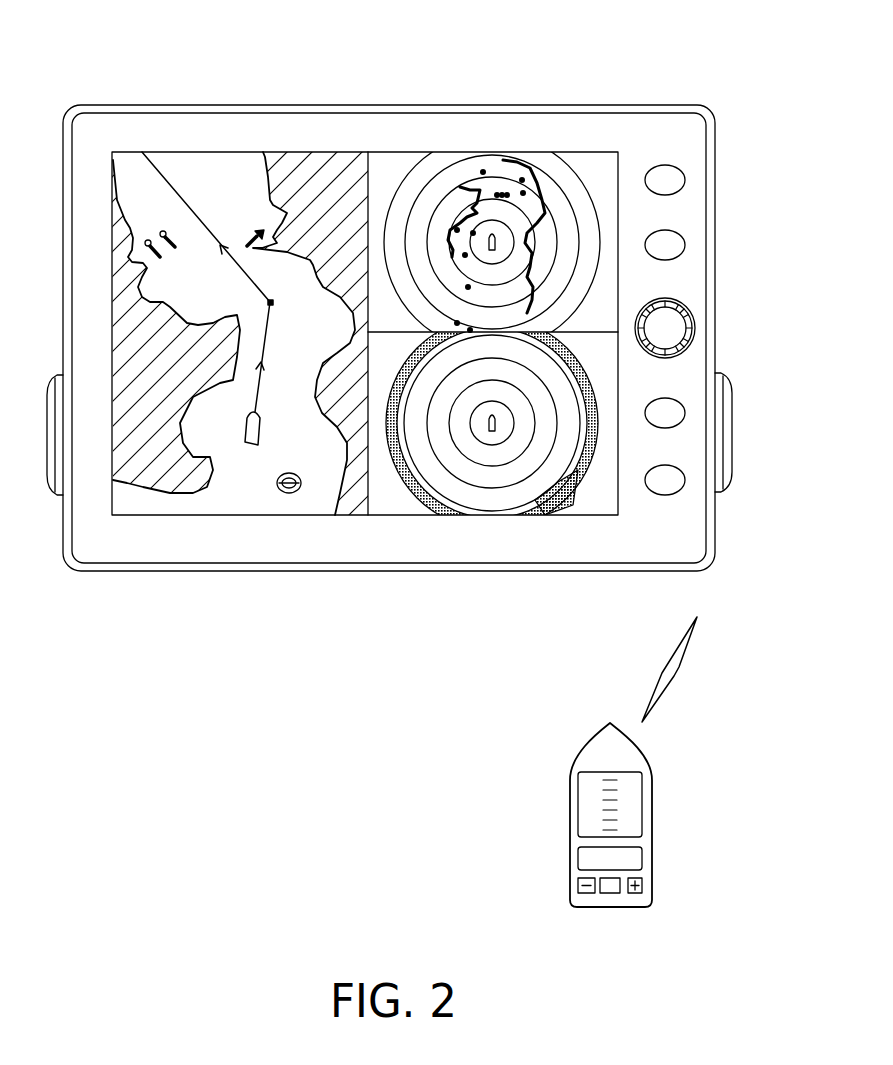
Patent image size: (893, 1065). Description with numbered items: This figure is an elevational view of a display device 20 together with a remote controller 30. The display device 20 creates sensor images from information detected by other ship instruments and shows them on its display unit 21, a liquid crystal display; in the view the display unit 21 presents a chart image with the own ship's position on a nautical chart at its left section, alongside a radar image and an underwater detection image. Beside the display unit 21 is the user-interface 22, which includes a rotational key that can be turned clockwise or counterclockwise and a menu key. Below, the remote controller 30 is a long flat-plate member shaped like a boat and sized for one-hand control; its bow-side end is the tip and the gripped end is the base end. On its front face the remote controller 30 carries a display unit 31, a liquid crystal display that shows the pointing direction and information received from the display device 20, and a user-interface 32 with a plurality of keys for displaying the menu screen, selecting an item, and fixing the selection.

The display device 20 is at (712, 98).
The display unit 21 is at (622, 168).
The user-interface 22 is at (695, 293).
The remote controller 30 is at (538, 738).
The display unit 31 is at (583, 805).
The user-interface 32 is at (575, 875).